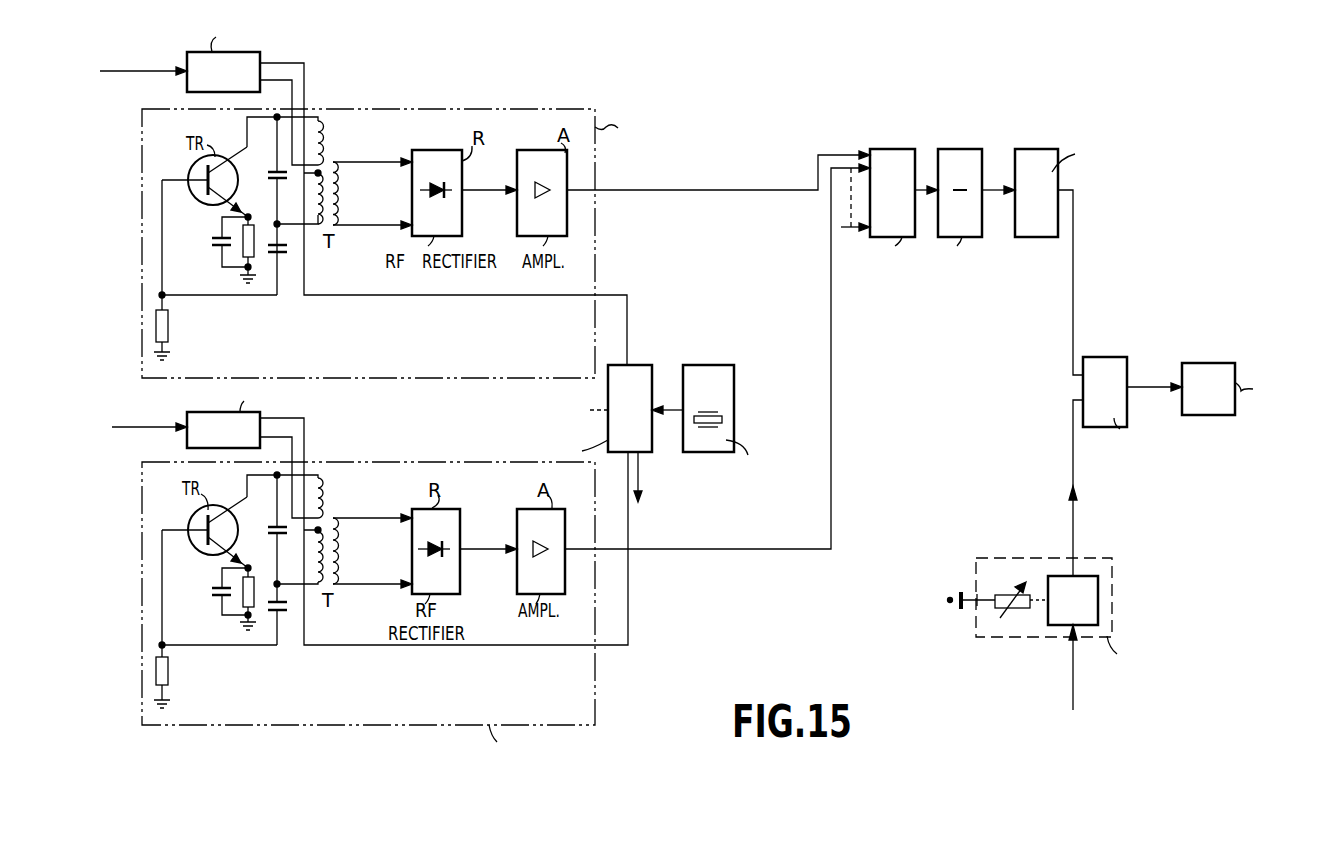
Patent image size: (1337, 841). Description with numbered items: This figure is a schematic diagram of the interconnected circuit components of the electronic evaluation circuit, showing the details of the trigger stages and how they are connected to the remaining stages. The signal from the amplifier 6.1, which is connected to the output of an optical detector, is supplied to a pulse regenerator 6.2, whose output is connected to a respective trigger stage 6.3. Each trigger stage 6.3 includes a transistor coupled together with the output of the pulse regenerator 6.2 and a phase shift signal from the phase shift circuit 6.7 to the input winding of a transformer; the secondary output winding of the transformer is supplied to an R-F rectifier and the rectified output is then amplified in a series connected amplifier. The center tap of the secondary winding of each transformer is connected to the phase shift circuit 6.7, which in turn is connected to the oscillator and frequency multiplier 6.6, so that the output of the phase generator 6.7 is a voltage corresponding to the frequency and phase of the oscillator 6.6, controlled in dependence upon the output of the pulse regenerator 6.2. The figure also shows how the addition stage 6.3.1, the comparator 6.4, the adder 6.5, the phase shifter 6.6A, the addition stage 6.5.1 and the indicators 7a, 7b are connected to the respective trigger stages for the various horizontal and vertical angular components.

The amplifier 6.1 is at (123, 242).
The pulse regenerator 6.2 is at (287, 233).
The trigger stage 6.3 is at (460, 110).
The addition stage 6.3.1 is at (895, 136).
The comparator 6.4 is at (958, 149).
The adder 6.5 is at (1028, 149).
The addition stage 6.5.1 is at (1113, 348).
The oscillator and frequency multiplier 6.6 is at (720, 368).
The phase shifter 6.6A is at (1094, 628).
The phase generator circuit 6.7 is at (632, 368).
The indicator 7a is at (1259, 389).
The indicator 7b is at (1208, 389).